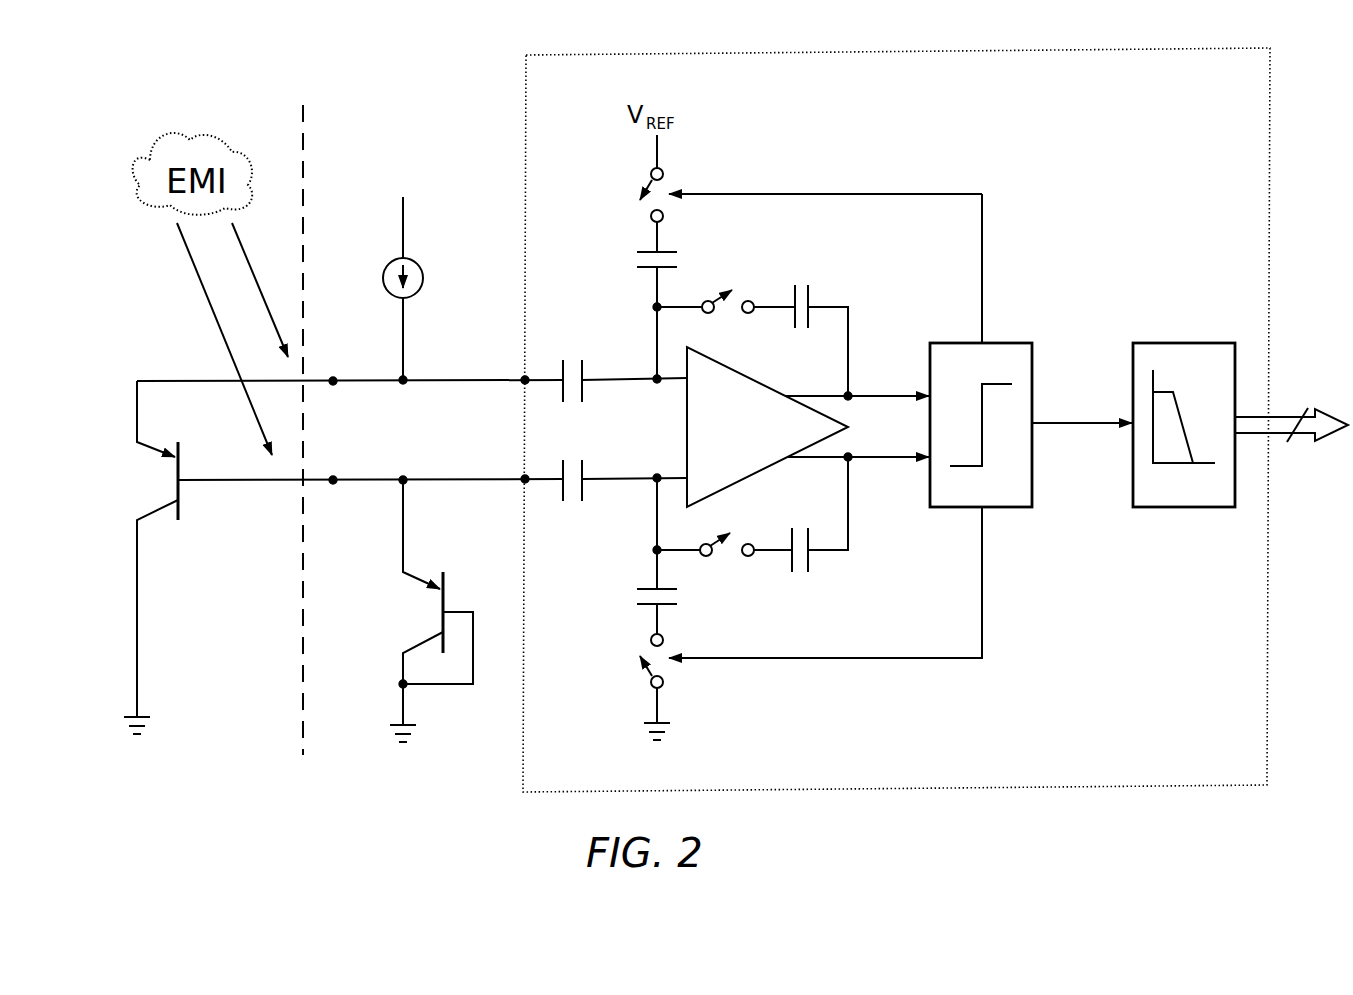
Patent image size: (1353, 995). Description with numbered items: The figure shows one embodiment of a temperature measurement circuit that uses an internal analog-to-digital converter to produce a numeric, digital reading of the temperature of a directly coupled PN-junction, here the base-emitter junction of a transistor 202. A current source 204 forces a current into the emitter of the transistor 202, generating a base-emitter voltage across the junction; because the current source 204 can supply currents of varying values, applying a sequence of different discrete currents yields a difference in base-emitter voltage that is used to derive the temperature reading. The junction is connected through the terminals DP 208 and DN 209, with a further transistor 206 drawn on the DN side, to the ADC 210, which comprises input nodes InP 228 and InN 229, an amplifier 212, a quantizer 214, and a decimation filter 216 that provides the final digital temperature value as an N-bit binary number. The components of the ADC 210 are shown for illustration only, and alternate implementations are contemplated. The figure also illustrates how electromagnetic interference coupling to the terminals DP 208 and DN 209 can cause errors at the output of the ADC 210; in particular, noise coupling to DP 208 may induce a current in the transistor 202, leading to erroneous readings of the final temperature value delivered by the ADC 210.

The transistor 202 is at (140, 455).
The current source 204 is at (424, 268).
The bias transistor 206 is at (445, 573).
The terminal DP 208 is at (335, 350).
The terminal DN 209 is at (338, 460).
The ADC 210 is at (1256, 767).
The amplifier 212 is at (748, 444).
The quantizer 214 is at (1001, 501).
The decimation filter 216 is at (1206, 501).
The input node InP 228 is at (532, 362).
The input node InN 229 is at (532, 494).